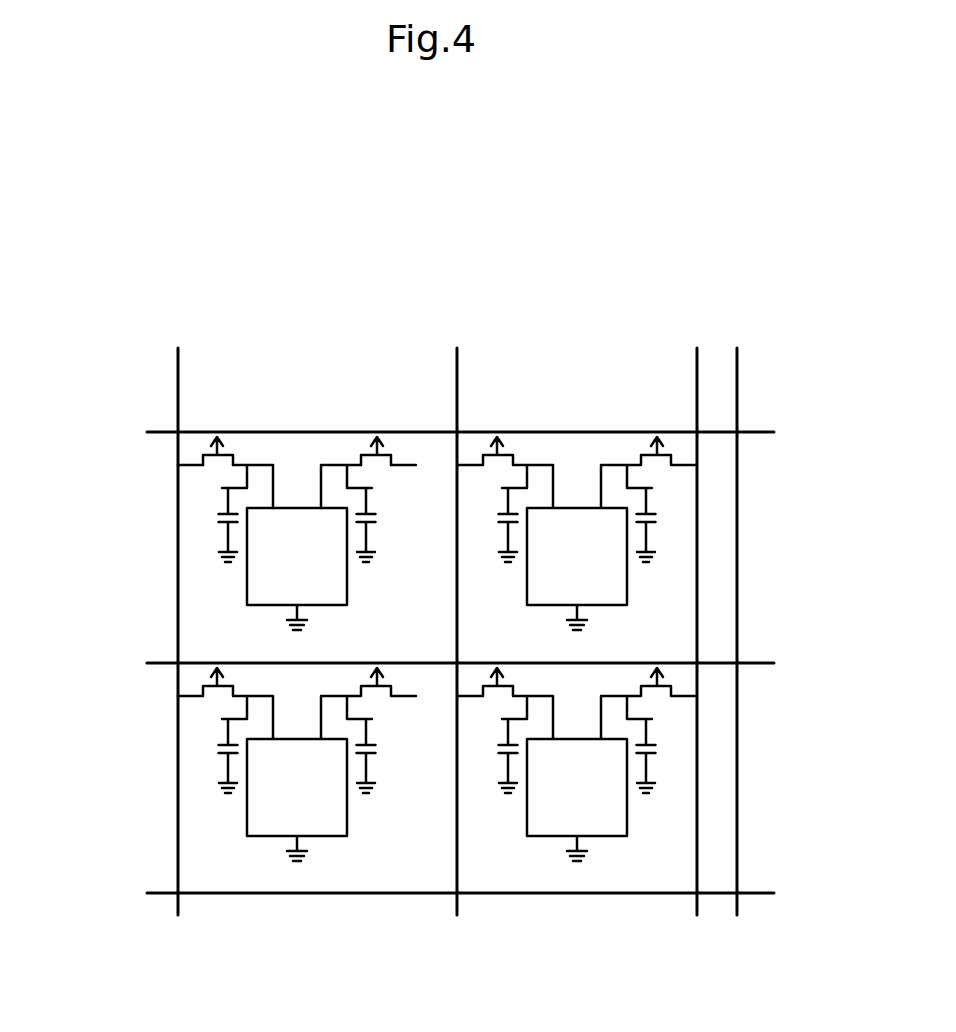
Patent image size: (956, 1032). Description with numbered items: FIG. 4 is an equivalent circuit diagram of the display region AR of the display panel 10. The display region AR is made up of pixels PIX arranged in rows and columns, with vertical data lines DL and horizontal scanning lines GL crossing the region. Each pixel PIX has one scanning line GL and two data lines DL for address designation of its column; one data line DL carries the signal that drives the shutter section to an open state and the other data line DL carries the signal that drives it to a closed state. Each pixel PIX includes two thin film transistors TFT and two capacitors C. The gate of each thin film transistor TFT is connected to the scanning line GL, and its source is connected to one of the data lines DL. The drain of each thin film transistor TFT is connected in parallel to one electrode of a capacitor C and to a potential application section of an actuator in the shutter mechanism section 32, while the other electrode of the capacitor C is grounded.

The display panel 10 is at (428, 201).
The display region AR is at (544, 289).
The data line DL is at (179, 385).
The scanning line GL is at (157, 432).
The pixel PIX is at (179, 504).
The thin film transistor TFT is at (225, 437).
The capacitor C is at (206, 532).
The shutter mechanism section 32 is at (339, 600).